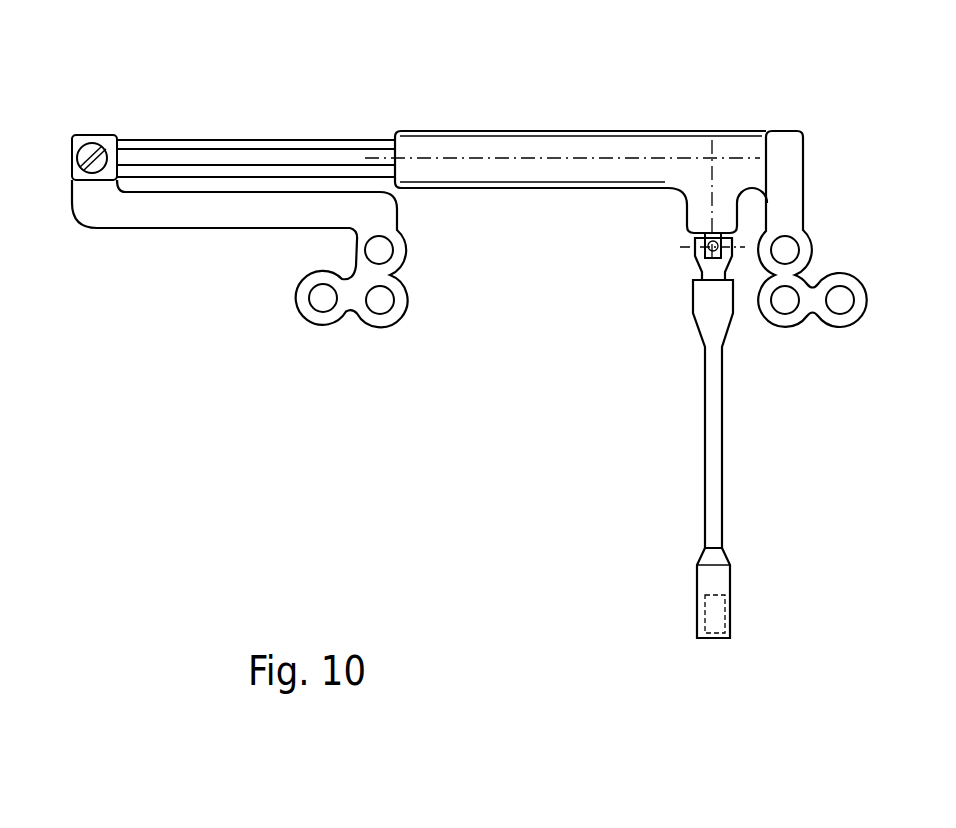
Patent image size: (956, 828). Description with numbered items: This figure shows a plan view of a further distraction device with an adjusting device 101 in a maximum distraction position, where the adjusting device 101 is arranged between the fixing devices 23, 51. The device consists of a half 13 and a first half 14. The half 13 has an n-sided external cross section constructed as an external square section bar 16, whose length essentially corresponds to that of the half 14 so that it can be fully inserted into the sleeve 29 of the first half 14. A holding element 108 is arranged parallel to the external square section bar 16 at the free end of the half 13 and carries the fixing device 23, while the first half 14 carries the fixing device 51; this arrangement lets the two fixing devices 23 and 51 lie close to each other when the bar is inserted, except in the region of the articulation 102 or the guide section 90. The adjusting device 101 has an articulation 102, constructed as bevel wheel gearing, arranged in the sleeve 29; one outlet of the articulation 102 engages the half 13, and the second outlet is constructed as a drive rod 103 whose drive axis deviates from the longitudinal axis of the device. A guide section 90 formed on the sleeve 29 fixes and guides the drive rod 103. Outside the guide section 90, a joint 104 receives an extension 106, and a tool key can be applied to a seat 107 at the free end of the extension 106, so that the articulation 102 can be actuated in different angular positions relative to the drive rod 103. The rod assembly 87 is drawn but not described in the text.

The half 13 is at (256, 90).
The external square section bar 16 is at (357, 140).
The sleeve 29 is at (596, 130).
The first half 14 is at (792, 215).
The articulation 102 is at (714, 157).
The adjusting device 101 is at (658, 210).
The drive rod 103 is at (716, 236).
The guide section 90 is at (687, 219).
The joint 104 is at (693, 259).
The connecting rod 87 is at (660, 498).
The extension 106 is at (703, 458).
The seat 107 is at (716, 645).
The holding element 108 is at (240, 288).
The fixing device 23 is at (340, 337).
The fixing device 51 is at (843, 335).